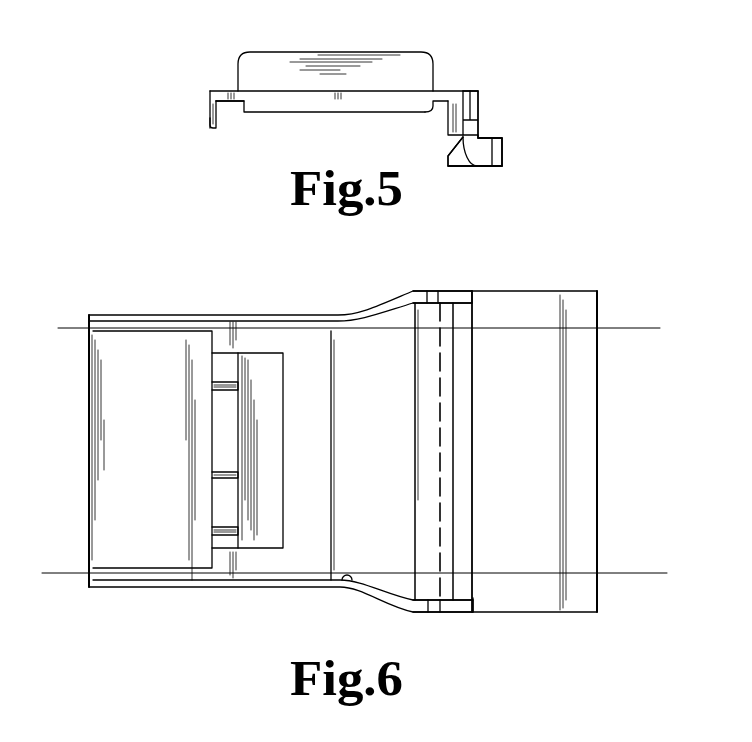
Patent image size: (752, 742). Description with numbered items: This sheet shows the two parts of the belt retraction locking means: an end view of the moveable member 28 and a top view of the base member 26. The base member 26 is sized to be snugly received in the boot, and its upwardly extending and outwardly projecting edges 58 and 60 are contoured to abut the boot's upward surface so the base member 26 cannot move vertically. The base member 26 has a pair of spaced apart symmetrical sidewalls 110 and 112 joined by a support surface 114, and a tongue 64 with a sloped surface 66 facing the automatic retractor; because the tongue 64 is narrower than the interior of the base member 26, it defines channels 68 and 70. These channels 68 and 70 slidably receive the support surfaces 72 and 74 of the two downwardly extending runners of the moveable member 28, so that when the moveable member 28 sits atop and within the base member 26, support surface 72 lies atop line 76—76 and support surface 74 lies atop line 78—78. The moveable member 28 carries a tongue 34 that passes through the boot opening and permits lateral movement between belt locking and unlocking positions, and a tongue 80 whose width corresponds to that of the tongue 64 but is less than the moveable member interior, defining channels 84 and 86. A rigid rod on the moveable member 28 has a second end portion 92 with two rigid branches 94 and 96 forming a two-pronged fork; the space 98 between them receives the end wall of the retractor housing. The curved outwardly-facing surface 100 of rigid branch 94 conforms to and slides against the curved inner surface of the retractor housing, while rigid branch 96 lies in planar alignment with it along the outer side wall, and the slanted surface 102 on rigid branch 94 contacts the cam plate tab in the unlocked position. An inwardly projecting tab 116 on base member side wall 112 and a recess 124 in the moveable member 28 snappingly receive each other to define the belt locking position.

In FIG. 6, the base member 26 is at (576, 279).
In FIG. 5, the moveable member 28 is at (514, 128).
In FIG. 5, the tongue 34 is at (331, 62).
In FIG. 6, the upwardly extending and outwardly projecting edge 58 is at (396, 304).
In FIG. 6, the upwardly extending and outwardly projecting edge 60 is at (402, 601).
In FIG. 6, the tongue 64 is at (232, 512).
In FIG. 6, the sloped surface 66 is at (268, 385).
In FIG. 6, the channel 68 is at (248, 330).
In FIG. 6, the channel 70 is at (240, 568).
In FIG. 5, the support surface 72 is at (447, 133).
In FIG. 5, the support surface 74 is at (210, 130).
In FIG. 6, the line 76— 76 is at (640, 328).
In FIG. 6, the line 78— 78 is at (655, 574).
In FIG. 5, the tongue 80 is at (333, 112).
In FIG. 5, the channel 84 is at (430, 108).
In FIG. 5, the channel 86 is at (233, 103).
In FIG. 5, the second end portion 92 is at (499, 167).
In FIG. 5, the rigid branch 94 is at (447, 158).
In FIG. 5, the rigid branch 96 is at (500, 133).
In FIG. 5, the space 98 is at (490, 156).
In FIG. 5, the curved outwardly-facing surface 100 is at (470, 167).
In FIG. 5, the slanted surface 102 is at (466, 92).
In FIG. 6, the sidewall 110 is at (309, 319).
In FIG. 6, the sidewall 112 is at (302, 587).
In FIG. 6, the support surface 114 is at (370, 438).
In FIG. 6, the tab 116 is at (347, 586).
In FIG. 5, the recess 124 is at (208, 112).